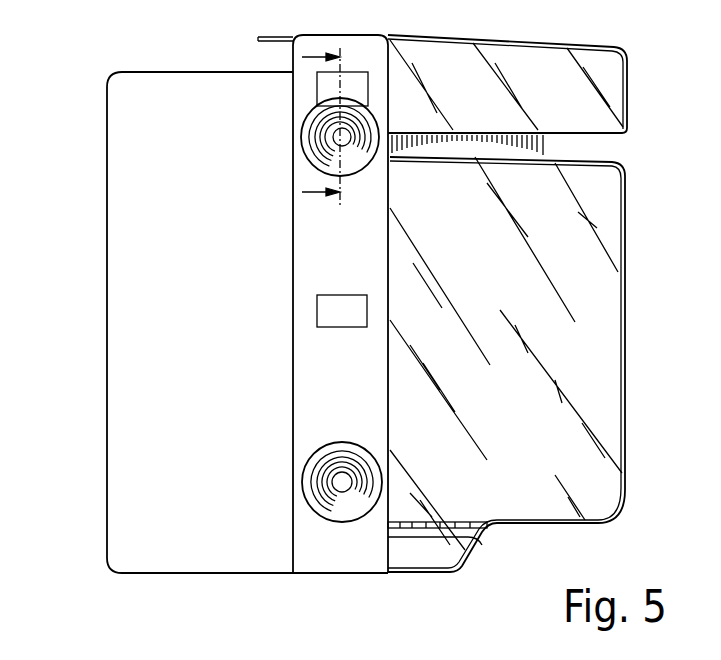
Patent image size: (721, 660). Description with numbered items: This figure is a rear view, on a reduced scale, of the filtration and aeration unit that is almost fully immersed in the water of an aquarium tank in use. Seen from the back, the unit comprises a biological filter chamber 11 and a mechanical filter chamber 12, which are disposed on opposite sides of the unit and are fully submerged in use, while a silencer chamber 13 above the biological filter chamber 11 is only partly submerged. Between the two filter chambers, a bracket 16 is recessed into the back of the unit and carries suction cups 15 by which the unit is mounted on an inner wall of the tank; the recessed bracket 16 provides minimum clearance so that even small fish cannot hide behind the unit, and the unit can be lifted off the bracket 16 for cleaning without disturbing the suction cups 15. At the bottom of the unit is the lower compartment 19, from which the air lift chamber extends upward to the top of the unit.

The biological filter chamber 11 is at (587, 370).
The mechanical filter chamber 12 is at (138, 420).
The silencer chamber 13 is at (598, 100).
The suction cups 15 is at (325, 130).
The bracket 16 is at (308, 275).
The lower compartment 19 is at (462, 570).